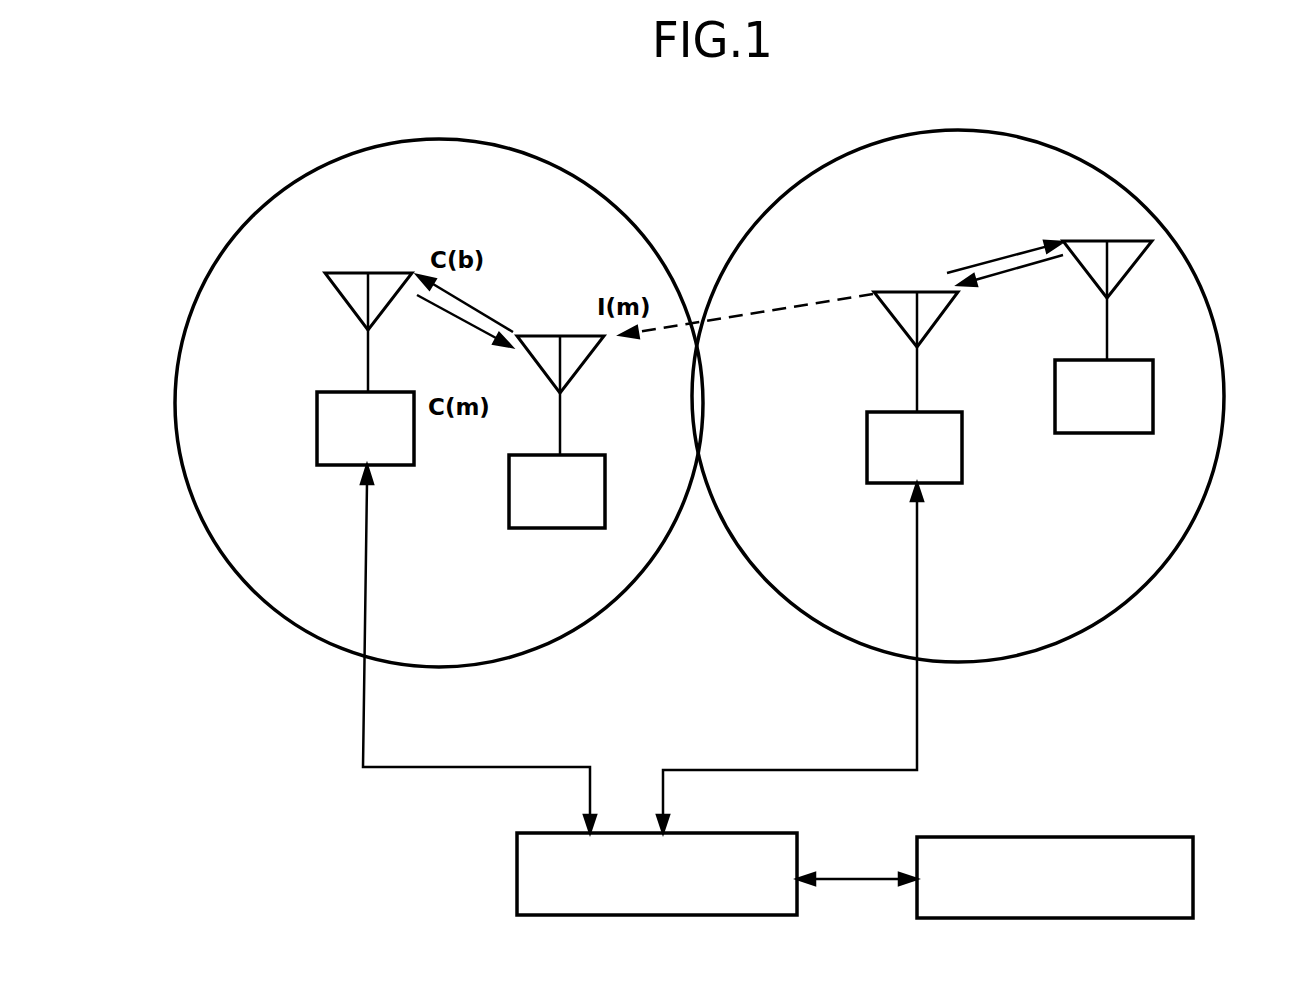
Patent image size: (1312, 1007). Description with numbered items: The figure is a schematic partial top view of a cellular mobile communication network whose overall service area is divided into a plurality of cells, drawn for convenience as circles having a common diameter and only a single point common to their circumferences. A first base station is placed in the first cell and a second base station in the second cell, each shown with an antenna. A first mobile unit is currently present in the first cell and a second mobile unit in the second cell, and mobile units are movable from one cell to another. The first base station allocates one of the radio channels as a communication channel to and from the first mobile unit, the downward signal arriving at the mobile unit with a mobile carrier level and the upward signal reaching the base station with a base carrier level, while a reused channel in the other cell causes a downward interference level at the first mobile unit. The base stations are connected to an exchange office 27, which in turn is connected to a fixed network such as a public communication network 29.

The exchange office 27 is at (517, 875).
The public communication network 29 is at (1193, 886).